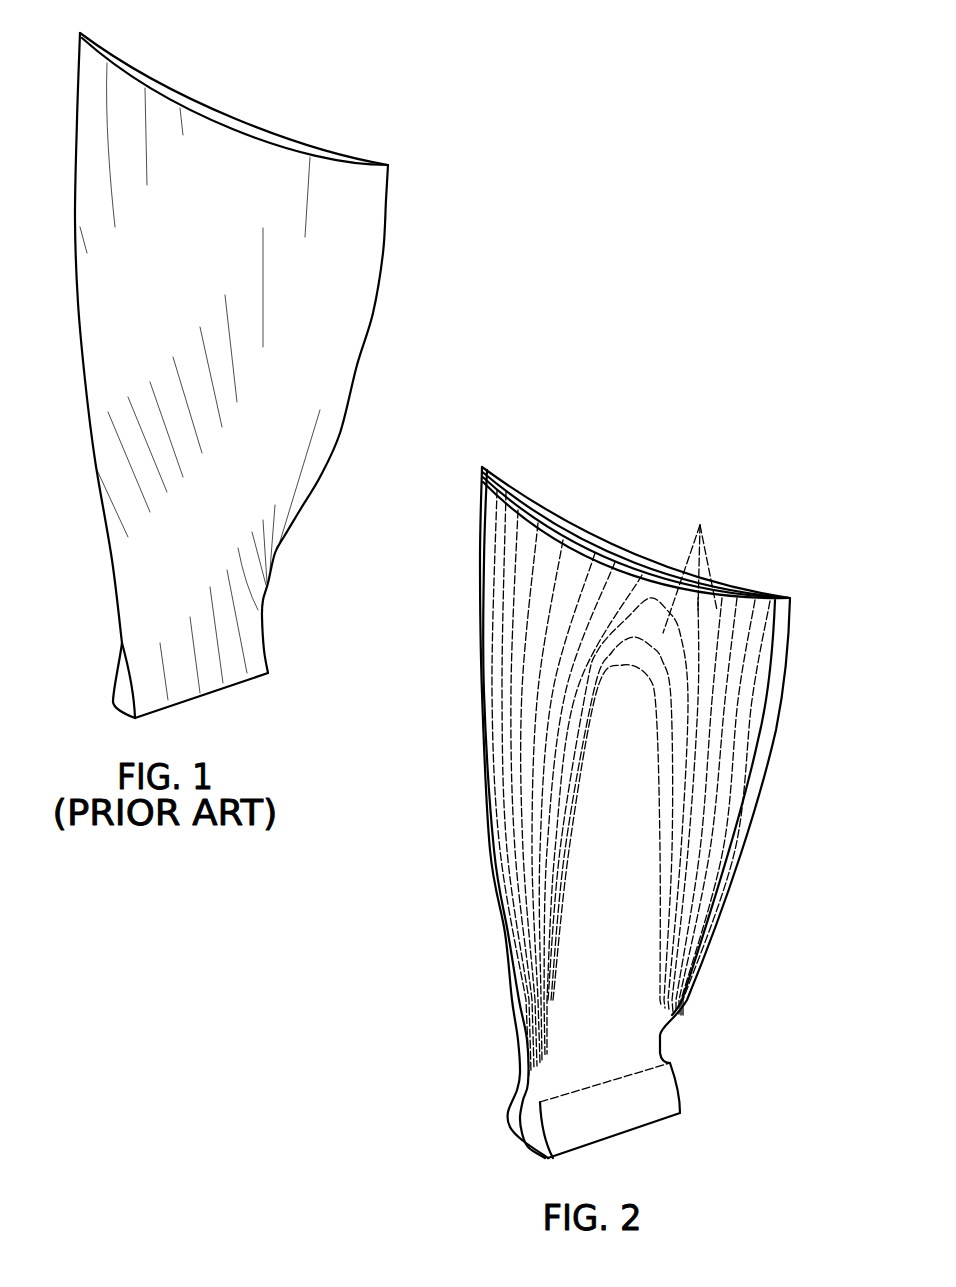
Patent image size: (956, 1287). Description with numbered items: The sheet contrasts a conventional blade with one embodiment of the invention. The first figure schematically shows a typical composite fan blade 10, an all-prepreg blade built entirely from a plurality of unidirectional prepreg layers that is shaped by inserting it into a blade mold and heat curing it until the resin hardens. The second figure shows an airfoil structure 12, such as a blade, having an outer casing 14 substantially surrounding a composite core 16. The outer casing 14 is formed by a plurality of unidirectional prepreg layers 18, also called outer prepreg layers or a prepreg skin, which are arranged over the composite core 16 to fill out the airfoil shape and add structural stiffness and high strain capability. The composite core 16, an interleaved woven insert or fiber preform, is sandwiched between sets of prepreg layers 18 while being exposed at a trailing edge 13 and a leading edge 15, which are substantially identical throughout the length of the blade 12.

In FIG. 1, the composite fan blade 10 is at (273, 92).
In FIG. 2, the airfoil structure 12 is at (571, 789).
In FIG. 2, the trailing edge 13 is at (495, 862).
In FIG. 2, the outer casing 14 is at (627, 789).
In FIG. 2, the leading edge 15 is at (745, 862).
In FIG. 2, the composite core 16 is at (490, 473).
In FIG. 2, the unidirectional prepreg layers 18 is at (631, 782).